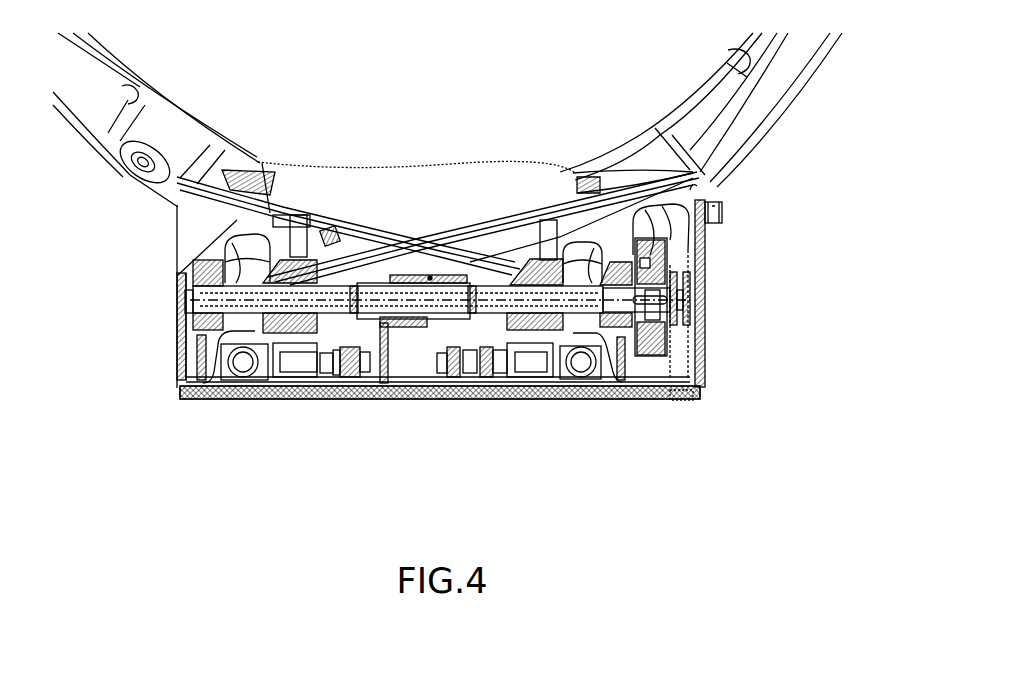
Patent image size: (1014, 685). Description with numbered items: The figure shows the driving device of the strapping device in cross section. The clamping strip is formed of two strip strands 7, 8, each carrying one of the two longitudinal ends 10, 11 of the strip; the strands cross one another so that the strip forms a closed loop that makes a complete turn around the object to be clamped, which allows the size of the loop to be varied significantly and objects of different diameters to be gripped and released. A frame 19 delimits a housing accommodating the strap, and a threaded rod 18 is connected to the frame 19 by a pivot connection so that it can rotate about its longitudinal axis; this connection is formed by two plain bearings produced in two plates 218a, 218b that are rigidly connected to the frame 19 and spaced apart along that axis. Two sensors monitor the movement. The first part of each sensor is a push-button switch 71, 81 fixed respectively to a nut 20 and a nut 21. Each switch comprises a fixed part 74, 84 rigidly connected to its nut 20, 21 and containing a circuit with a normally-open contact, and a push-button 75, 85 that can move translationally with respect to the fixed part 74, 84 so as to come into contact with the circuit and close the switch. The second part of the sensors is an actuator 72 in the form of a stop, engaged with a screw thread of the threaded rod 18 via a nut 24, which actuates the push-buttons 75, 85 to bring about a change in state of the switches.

The strip strand 7 is at (482, 225).
The strip strand 8 is at (380, 257).
The longitudinal end 10 is at (317, 262).
The longitudinal end 11 is at (530, 256).
The threaded rod 18 is at (200, 308).
The frame 19 is at (177, 268).
The nut 20 is at (203, 382).
The nut 21 is at (620, 327).
The nut 24 is at (430, 280).
The push-button switch 71 is at (283, 400).
The actuator 72 is at (383, 378).
The fixed part 74 is at (348, 376).
The push-button 75 is at (372, 378).
The push-button switch 81 is at (537, 400).
The fixed part 84 is at (477, 378).
The push-button 85 is at (450, 378).
The plate 218a is at (180, 322).
The plate 218b is at (637, 372).